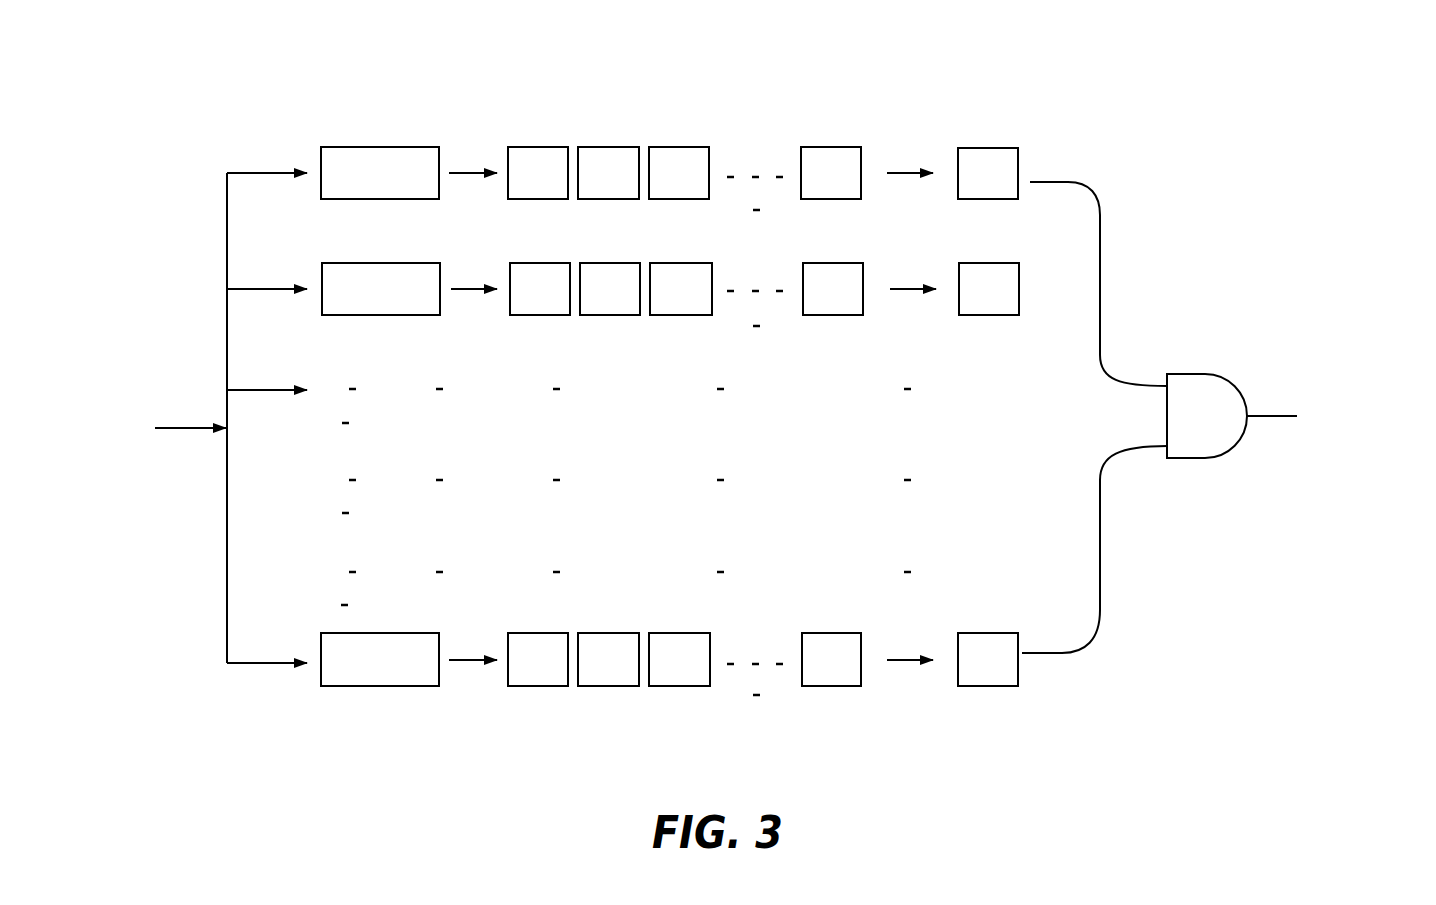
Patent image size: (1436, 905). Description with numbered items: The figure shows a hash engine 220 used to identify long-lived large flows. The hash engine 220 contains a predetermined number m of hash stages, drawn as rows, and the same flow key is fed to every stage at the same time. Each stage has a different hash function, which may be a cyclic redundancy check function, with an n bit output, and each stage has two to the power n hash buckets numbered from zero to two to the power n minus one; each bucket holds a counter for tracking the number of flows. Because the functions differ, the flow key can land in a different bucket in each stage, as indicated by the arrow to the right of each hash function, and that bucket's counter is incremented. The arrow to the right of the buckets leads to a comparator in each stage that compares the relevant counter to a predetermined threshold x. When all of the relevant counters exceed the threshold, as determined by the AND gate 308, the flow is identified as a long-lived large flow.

The hash engine 220 is at (968, 52).
The AND gate 308 is at (1204, 374).